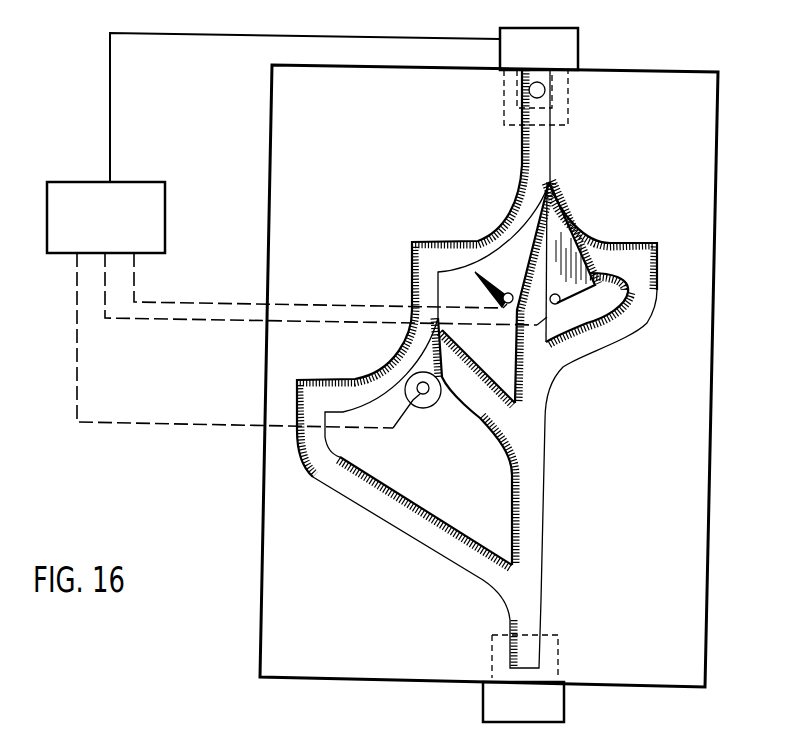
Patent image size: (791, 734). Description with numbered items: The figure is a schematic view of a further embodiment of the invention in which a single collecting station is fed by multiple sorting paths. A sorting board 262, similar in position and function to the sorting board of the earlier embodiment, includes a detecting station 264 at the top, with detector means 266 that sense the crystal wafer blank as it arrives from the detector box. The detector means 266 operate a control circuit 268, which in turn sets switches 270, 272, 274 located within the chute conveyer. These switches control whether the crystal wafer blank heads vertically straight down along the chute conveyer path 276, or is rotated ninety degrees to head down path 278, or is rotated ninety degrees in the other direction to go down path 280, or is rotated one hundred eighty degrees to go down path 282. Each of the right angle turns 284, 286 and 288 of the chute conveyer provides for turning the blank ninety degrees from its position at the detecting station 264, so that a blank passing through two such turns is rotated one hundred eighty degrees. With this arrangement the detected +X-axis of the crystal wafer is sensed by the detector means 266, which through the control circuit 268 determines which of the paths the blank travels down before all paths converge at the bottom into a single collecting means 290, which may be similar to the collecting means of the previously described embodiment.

The sorting board 262 is at (710, 542).
The detecting station 264 is at (576, 87).
The detector means 266 is at (578, 44).
The control circuit 268 is at (166, 218).
The switch 270 is at (432, 392).
The switch 272 is at (507, 266).
The switch 274 is at (565, 253).
The chute conveyer path 276 is at (568, 336).
The path 278 is at (492, 348).
The path 280 is at (644, 322).
The path 282 is at (418, 504).
The right angle turn 284 is at (652, 247).
The right angle turn 286 is at (411, 241).
The right angle turn 288 is at (298, 380).
The collecting means 290 is at (558, 668).